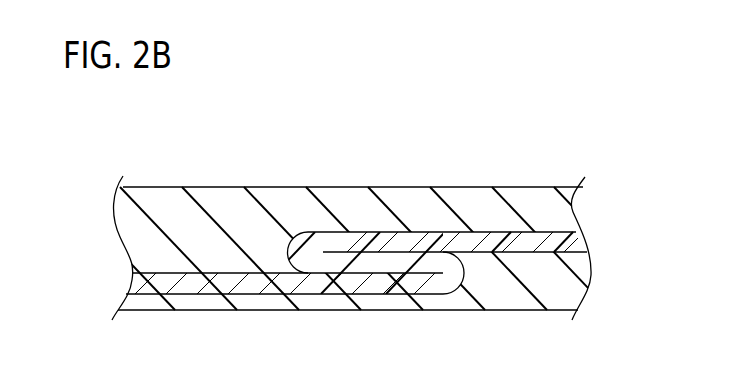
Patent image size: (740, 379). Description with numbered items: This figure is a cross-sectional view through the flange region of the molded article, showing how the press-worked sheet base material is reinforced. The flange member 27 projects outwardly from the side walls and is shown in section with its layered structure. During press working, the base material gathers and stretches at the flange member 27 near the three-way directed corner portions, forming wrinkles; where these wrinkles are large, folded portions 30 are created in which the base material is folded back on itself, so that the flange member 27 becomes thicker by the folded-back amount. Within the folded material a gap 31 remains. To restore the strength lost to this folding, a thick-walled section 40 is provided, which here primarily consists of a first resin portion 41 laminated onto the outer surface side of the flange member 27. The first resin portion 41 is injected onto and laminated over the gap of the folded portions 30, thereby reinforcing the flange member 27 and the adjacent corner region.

The thick-walled section 40 is at (335, 186).
The first resin portion 41 is at (272, 186).
The flange member 27 is at (548, 243).
The gap 31 is at (390, 252).
The folded portion 30 is at (384, 279).